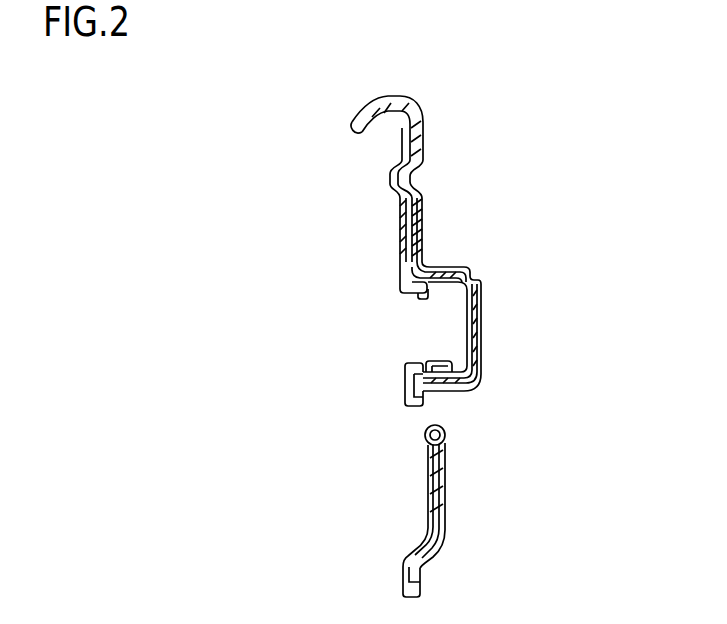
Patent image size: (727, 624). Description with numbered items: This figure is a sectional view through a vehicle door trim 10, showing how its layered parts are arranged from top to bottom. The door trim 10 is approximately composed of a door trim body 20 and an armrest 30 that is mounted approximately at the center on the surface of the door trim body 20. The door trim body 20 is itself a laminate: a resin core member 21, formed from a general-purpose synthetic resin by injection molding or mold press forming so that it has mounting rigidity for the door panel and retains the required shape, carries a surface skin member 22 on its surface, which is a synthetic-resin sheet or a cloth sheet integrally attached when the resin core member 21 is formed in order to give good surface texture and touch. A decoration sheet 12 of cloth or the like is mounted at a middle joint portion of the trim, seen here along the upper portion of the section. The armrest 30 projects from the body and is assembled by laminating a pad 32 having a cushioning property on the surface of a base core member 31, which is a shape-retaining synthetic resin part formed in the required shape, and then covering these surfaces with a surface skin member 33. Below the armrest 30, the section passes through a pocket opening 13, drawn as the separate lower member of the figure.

The door trim 10 is at (445, 155).
The decoration sheet 12 is at (422, 223).
The door trim body 20 is at (341, 249).
The resin core member 21 is at (399, 264).
The surface skin member 22 is at (399, 221).
The armrest 30 is at (476, 335).
The base core member 31 is at (470, 329).
The pad 32 is at (480, 301).
The surface skin member 33 is at (483, 323).
The pocket opening 13 is at (428, 413).